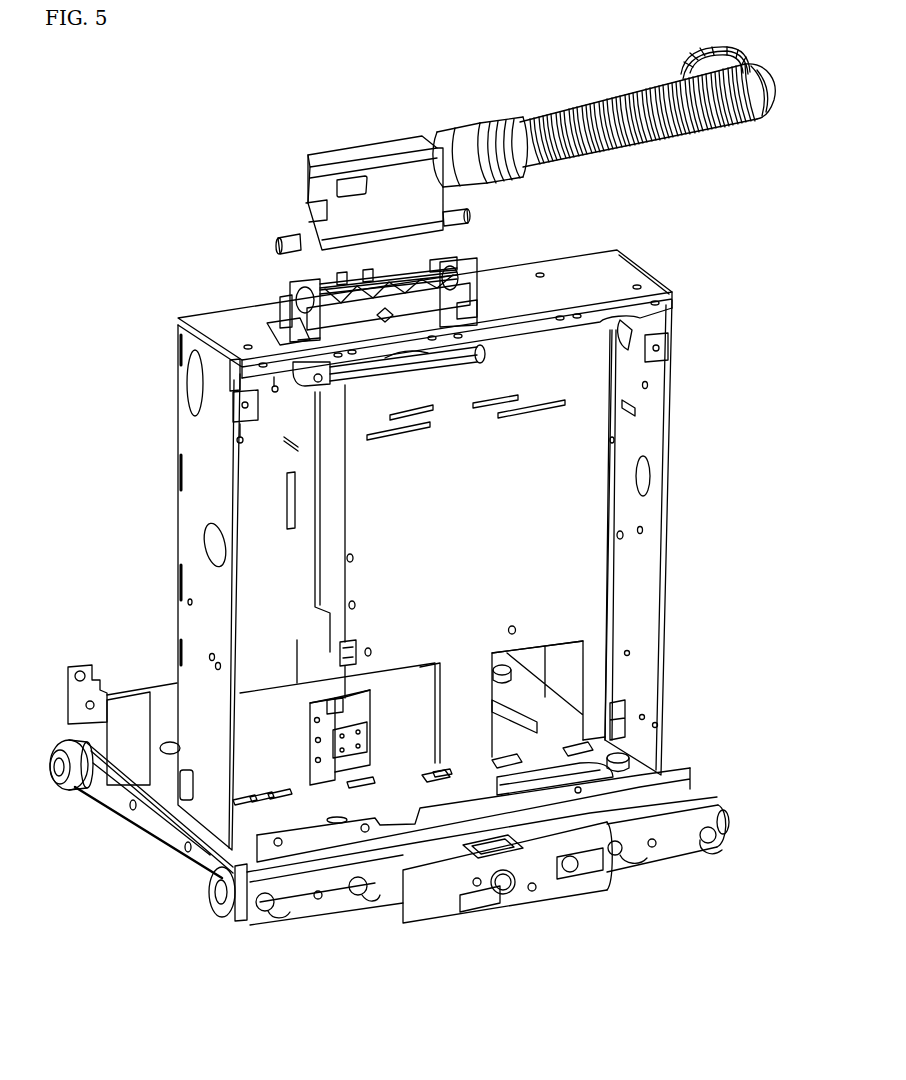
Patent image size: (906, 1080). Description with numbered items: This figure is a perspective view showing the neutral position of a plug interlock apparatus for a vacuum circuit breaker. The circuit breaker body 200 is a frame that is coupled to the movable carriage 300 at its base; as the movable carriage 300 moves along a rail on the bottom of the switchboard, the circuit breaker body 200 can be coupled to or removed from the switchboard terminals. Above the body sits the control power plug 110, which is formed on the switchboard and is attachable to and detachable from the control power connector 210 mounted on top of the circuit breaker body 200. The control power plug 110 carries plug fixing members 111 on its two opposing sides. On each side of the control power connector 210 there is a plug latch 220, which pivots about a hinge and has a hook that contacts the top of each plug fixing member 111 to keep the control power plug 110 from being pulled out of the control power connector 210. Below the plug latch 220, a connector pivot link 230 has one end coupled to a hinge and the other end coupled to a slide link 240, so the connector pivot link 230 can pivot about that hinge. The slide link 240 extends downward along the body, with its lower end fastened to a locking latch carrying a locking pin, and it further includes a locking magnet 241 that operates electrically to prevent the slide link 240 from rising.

The control power plug 110 is at (382, 186).
The plug fixing member 111 is at (293, 237).
The circuit breaker body 200 is at (200, 582).
The control power connector 210 is at (373, 273).
The plug latch 220 is at (473, 273).
The connector pivot link 230 is at (300, 373).
The slide link 240 is at (333, 518).
The locking magnet 241 is at (375, 745).
The movable carriage 300 is at (157, 820).